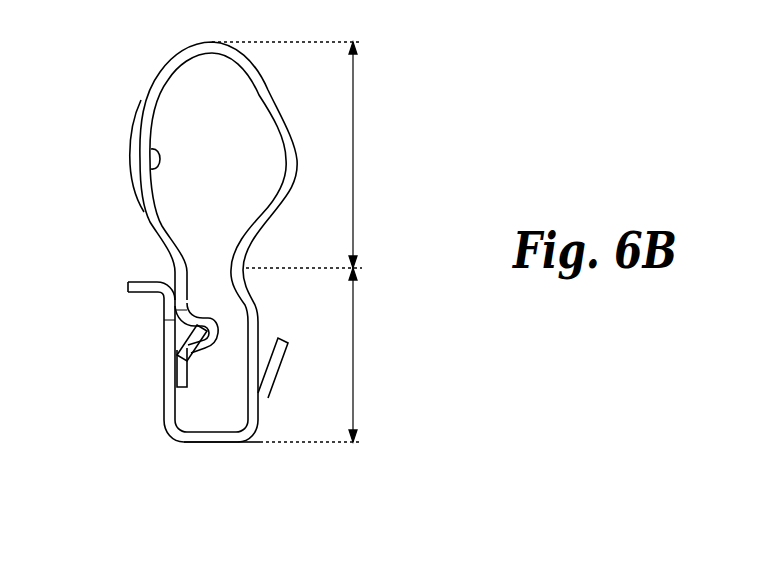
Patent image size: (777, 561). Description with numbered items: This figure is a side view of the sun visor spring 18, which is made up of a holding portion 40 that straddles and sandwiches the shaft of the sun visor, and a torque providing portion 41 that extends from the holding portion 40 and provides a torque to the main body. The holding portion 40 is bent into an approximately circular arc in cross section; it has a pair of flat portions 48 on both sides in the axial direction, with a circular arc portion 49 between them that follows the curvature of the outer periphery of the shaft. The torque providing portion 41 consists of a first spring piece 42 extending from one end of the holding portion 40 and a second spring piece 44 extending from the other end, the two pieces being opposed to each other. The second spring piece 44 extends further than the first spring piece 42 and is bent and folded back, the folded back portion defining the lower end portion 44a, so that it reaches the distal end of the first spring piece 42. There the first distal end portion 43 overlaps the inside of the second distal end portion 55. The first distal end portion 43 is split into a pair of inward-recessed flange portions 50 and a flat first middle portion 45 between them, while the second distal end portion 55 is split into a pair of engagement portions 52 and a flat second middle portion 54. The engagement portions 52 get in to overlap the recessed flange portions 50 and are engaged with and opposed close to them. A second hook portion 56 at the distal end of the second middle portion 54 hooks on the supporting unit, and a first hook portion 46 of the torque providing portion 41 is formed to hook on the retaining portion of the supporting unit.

The sun visor spring 18 is at (229, 481).
The holding portion 40 is at (353, 148).
The torque providing portion 41 is at (355, 341).
The first spring piece 42 is at (168, 293).
The first distal end portion 43 is at (163, 334).
The second spring piece 44 is at (225, 436).
The lower end portion 44a is at (193, 447).
The first middle portion 45 is at (198, 352).
The first hook portion 46 is at (283, 352).
The flat portions 48 is at (156, 167).
The circular arc portion 49 is at (126, 156).
The flange portions 50 is at (208, 358).
The engagement portions 52 is at (172, 332).
The second middle portion 54 is at (172, 312).
The second distal end portion 55 is at (166, 320).
The second hook portion 56 is at (127, 284).